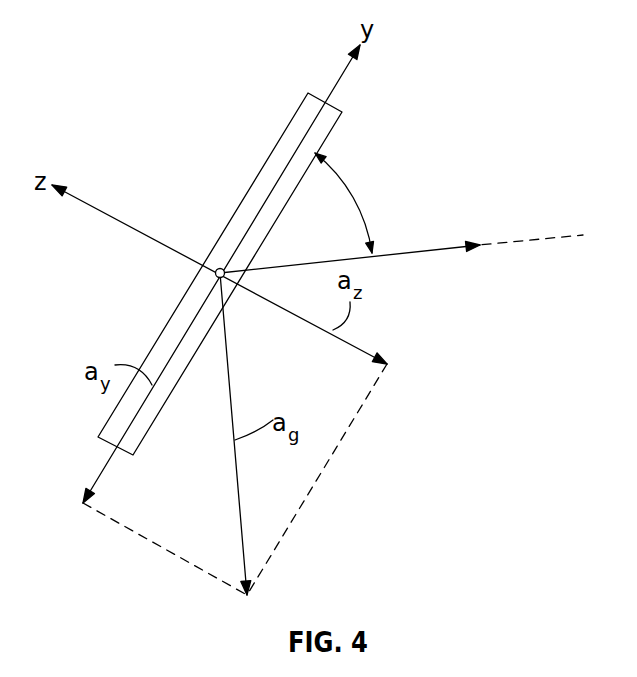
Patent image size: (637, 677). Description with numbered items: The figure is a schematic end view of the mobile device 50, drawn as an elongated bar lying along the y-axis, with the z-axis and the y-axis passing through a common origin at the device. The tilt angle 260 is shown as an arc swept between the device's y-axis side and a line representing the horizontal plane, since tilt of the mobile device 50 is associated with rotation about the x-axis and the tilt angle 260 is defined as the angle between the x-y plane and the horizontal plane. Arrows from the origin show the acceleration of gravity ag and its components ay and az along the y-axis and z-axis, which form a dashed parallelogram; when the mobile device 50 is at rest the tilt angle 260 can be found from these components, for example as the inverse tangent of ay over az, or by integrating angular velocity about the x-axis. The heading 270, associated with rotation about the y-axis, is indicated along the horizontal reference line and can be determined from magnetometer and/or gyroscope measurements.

The mobile device 50 is at (257, 97).
The tilt angle 260 is at (358, 190).
The heading 270 is at (408, 257).